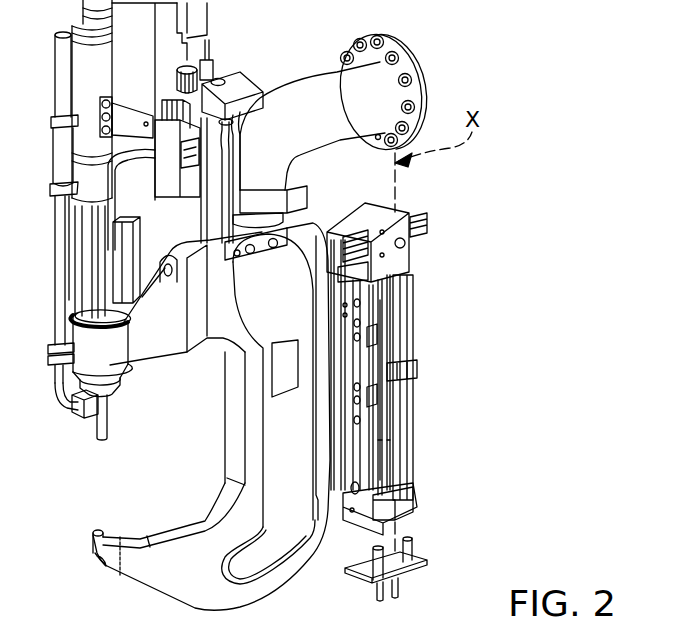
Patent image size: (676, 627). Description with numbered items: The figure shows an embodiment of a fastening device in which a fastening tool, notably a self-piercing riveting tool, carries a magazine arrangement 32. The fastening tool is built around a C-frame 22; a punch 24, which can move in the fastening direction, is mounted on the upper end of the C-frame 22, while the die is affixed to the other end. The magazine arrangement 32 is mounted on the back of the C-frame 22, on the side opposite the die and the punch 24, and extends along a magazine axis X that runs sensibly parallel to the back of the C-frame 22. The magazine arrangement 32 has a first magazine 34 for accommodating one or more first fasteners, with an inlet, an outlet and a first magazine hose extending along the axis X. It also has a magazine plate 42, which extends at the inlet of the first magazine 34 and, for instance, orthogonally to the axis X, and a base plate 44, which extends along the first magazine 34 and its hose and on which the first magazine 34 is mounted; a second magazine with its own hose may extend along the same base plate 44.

The C-frame 22 is at (90, 585).
The punch 24 is at (77, 447).
The magazine arrangement 32 is at (438, 347).
The first magazine 34 is at (405, 453).
The magazine plate 42 is at (405, 505).
The base plate 44 is at (413, 334).